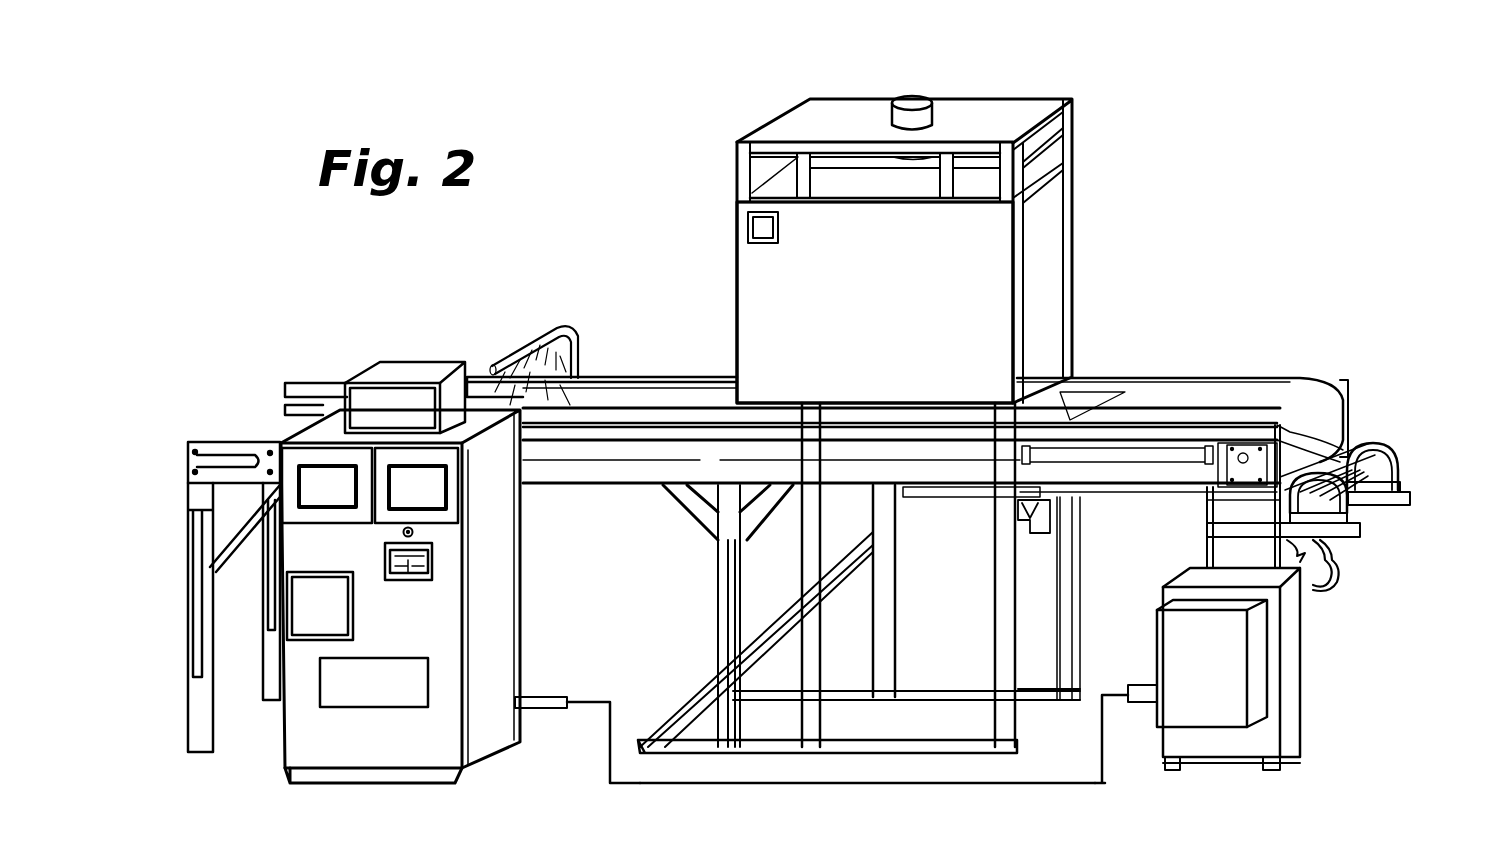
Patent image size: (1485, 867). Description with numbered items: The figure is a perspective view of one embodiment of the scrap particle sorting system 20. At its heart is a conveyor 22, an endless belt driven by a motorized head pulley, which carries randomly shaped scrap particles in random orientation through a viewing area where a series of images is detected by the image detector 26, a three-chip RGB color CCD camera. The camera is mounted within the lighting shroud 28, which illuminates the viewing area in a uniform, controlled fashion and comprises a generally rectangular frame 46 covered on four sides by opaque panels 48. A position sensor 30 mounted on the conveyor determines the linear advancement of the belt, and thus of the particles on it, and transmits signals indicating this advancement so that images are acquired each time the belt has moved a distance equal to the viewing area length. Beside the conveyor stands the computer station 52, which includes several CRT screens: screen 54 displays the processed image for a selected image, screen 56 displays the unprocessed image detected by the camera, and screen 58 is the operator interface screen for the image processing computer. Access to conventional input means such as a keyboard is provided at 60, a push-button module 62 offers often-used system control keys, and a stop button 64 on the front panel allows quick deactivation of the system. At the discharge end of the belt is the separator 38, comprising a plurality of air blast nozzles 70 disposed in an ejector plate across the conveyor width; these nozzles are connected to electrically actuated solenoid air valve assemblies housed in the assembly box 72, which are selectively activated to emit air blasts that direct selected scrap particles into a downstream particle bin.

The scrap particle sorting system 20 is at (692, 187).
The conveyor 22 is at (643, 393).
The image detector 26 is at (938, 97).
The lighting shroud 28 is at (1078, 252).
The position sensor 30 is at (1020, 520).
The separator 38 is at (1370, 447).
The frame 46 is at (1080, 148).
The opaque panels 48 is at (908, 316).
The computer station 52 is at (303, 742).
The screen 54 is at (312, 492).
The screen 56 is at (440, 490).
The screen 58 is at (333, 607).
The input means access 60 is at (395, 692).
The push-button module 62 is at (433, 560).
The stop button 64 is at (416, 532).
The air blast nozzles 70 is at (1347, 560).
The assembly box 72 is at (1295, 640).